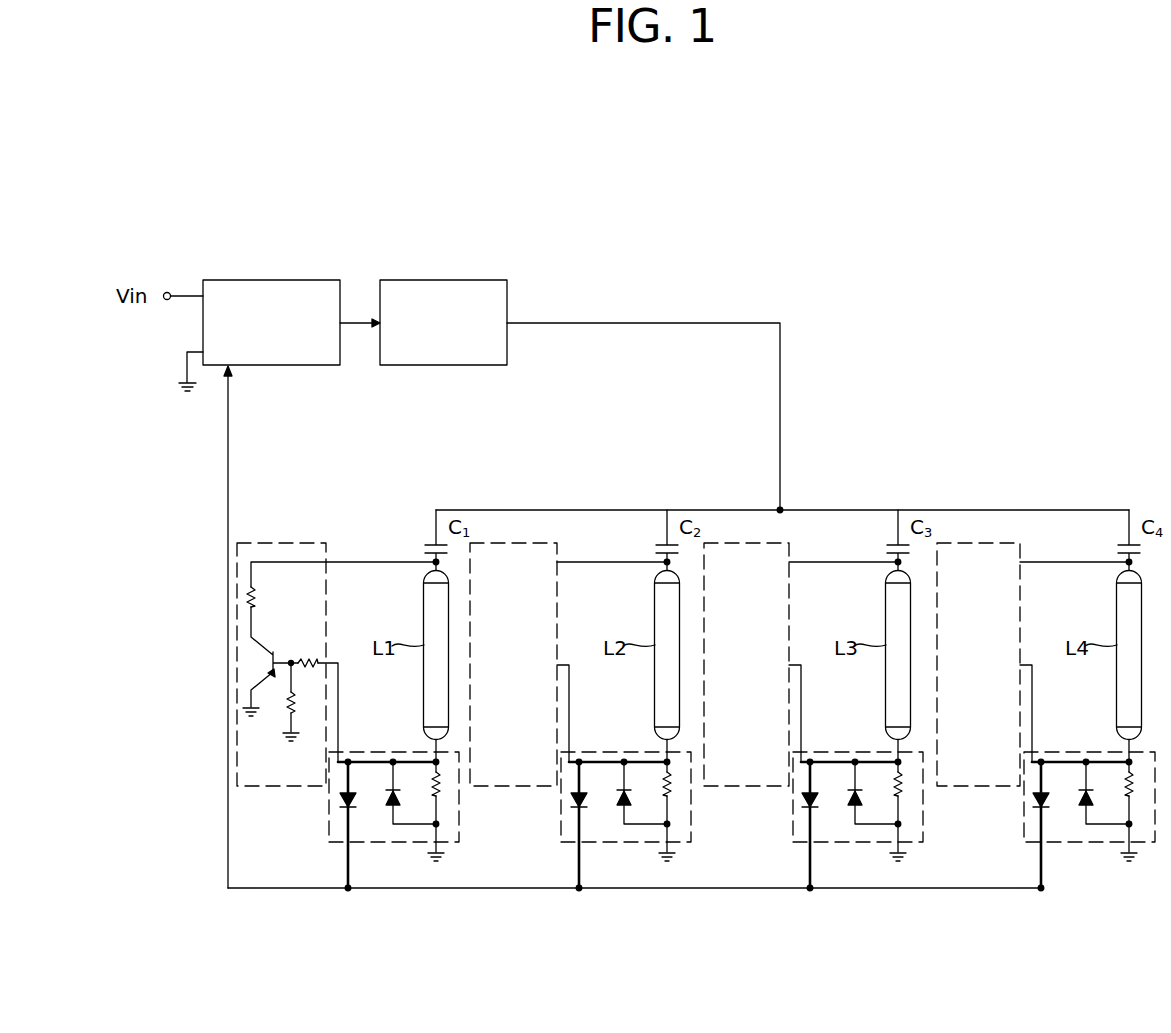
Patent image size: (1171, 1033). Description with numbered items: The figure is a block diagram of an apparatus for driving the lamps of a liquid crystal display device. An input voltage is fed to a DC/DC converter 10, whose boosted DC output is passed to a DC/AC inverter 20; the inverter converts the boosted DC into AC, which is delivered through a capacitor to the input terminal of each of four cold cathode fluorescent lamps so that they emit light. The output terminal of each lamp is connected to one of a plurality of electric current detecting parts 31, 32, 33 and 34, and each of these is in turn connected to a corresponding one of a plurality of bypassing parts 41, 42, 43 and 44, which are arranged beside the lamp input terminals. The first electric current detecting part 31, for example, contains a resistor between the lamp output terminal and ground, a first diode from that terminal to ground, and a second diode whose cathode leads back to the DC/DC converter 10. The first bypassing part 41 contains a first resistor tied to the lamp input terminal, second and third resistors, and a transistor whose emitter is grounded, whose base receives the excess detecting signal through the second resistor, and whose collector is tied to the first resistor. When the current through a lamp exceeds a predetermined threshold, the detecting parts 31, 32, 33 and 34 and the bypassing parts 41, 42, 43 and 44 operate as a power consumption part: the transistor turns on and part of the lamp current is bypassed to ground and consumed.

The DC/DC converter 10 is at (249, 280).
The DC/AC inverter 20 is at (428, 280).
The first electric current detecting part 31 is at (329, 808).
The second electric current detecting part 32 is at (561, 808).
The third electric current detecting part 33 is at (793, 808).
The fourth electric current detecting part 34 is at (1024, 808).
The first bypassing part 41 is at (326, 552).
The second bypassing part 42 is at (557, 552).
The third bypassing part 43 is at (789, 552).
The fourth bypassing part 44 is at (1020, 552).